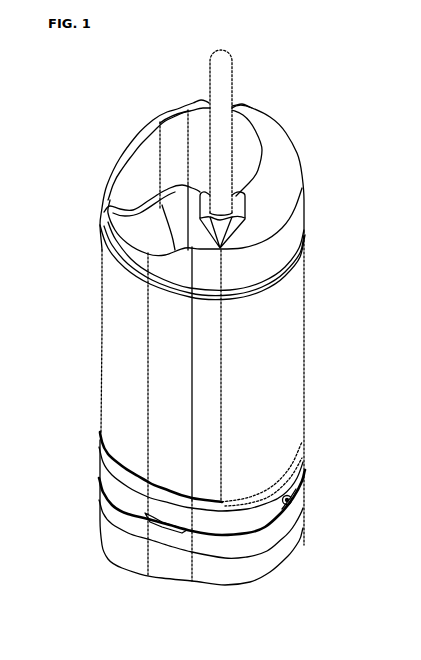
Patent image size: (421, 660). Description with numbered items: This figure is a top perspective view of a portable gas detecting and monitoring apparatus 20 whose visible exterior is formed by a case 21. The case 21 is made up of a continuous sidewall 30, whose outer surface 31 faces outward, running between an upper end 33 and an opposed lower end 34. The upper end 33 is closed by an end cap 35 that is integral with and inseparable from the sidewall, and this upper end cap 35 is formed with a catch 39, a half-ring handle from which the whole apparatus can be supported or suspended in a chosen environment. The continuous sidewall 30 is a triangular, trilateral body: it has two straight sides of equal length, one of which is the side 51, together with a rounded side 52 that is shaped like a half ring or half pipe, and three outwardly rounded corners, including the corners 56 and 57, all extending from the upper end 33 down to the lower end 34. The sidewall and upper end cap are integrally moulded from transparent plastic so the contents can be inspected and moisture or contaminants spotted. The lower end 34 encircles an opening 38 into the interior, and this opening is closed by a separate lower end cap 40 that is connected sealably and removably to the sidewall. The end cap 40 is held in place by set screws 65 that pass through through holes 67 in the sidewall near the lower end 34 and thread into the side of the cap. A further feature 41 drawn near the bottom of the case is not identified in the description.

The portable gas detecting and monitoring apparatus 20 is at (302, 131).
The catch 39 is at (223, 73).
The end cap 35 is at (293, 182).
The upper end 33 is at (305, 219).
The outer surface 31 is at (288, 315).
The side 52 is at (287, 348).
The continuous sidewall 30 is at (303, 403).
The corner 57 is at (102, 302).
The case 21 is at (101, 338).
The side 51 is at (167, 372).
The corner 56 is at (222, 443).
The lower end 34 is at (297, 478).
The set screws 65 is at (292, 498).
The through holes 67 is at (290, 506).
The opening 38 is at (244, 533).
The end cap 40 is at (106, 500).
The bottom 41 is at (172, 577).